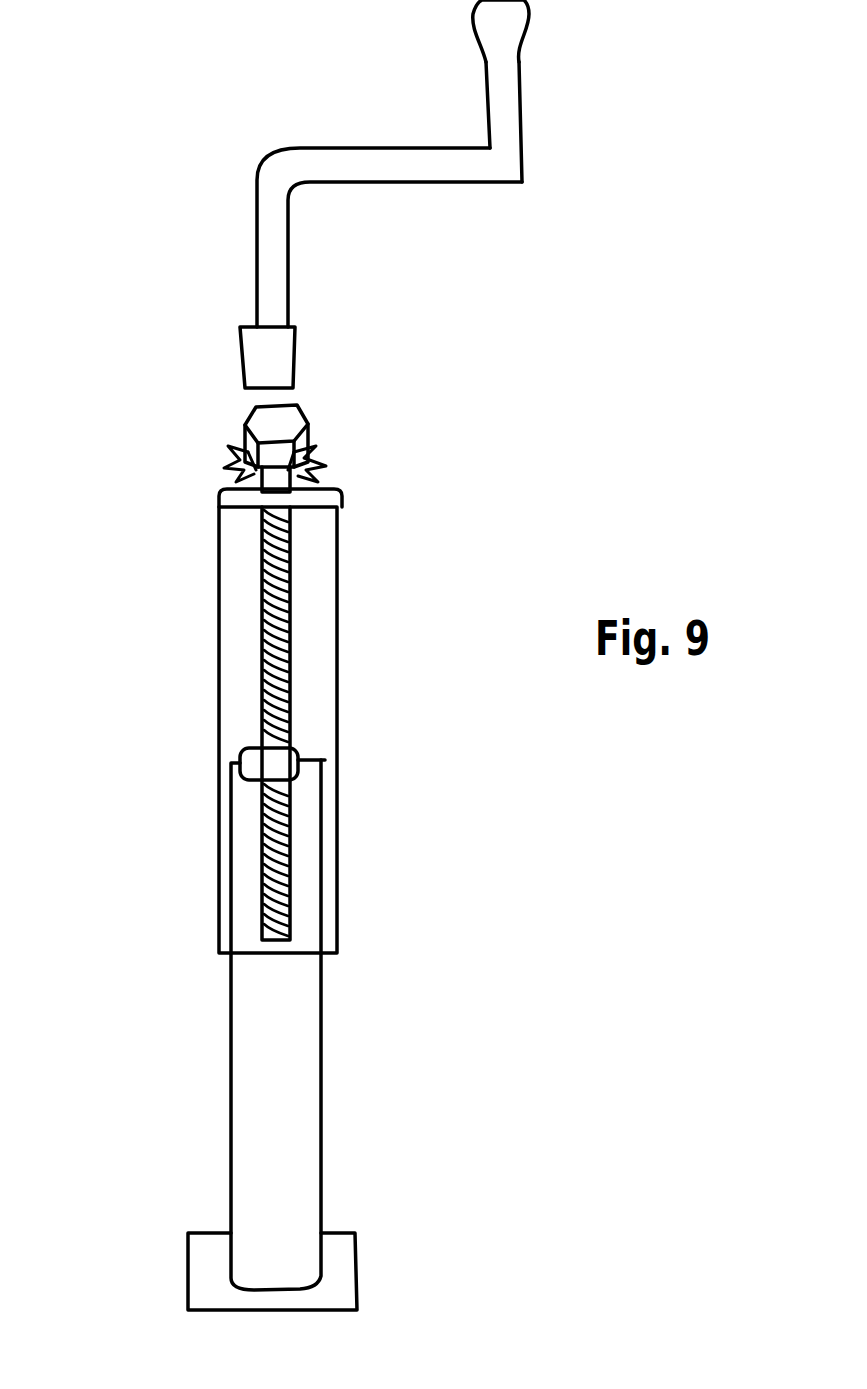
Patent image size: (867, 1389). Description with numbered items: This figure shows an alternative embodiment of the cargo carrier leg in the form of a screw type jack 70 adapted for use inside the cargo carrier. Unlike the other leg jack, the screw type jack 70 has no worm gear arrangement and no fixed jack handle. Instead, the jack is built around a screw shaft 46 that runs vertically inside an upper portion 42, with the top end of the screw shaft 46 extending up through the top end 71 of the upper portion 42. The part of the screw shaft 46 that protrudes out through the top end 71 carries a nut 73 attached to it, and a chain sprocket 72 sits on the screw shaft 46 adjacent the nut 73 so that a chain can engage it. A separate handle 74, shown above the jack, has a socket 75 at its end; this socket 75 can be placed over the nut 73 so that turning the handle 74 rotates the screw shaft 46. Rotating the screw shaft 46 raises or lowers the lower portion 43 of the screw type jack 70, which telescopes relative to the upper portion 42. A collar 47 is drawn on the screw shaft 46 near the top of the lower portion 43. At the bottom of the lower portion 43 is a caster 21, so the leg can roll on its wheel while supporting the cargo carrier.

The screw type jack 70 is at (37, 535).
The handle 74 is at (407, 175).
The socket 75 is at (417, 299).
The nut 73 is at (300, 403).
The chain sprocket 72 is at (240, 447).
The top end 71 is at (342, 490).
The upper portion 42 is at (337, 795).
The screw shaft 46 is at (290, 692).
The collar 47 is at (247, 769).
The lower portion 43 is at (322, 1053).
The caster 21 is at (352, 1252).